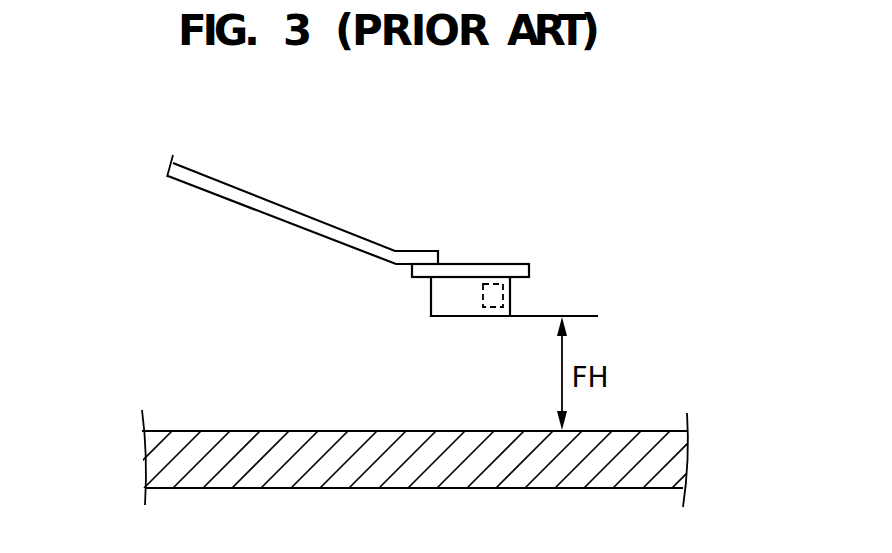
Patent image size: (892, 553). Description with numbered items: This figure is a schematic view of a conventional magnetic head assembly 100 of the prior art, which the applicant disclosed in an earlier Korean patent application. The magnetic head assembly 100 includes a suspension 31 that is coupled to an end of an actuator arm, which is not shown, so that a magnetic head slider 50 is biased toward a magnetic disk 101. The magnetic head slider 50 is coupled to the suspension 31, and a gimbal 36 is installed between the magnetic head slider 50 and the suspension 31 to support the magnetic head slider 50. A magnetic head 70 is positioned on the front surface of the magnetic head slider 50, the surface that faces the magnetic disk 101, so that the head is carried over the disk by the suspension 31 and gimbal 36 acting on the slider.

The magnetic head assembly 100 is at (663, 182).
The suspension 31 is at (285, 207).
The gimbal 36 is at (513, 266).
The magnetic head slider 50 is at (453, 308).
The magnetic head 70 is at (492, 308).
The magnetic disk 101 is at (175, 453).